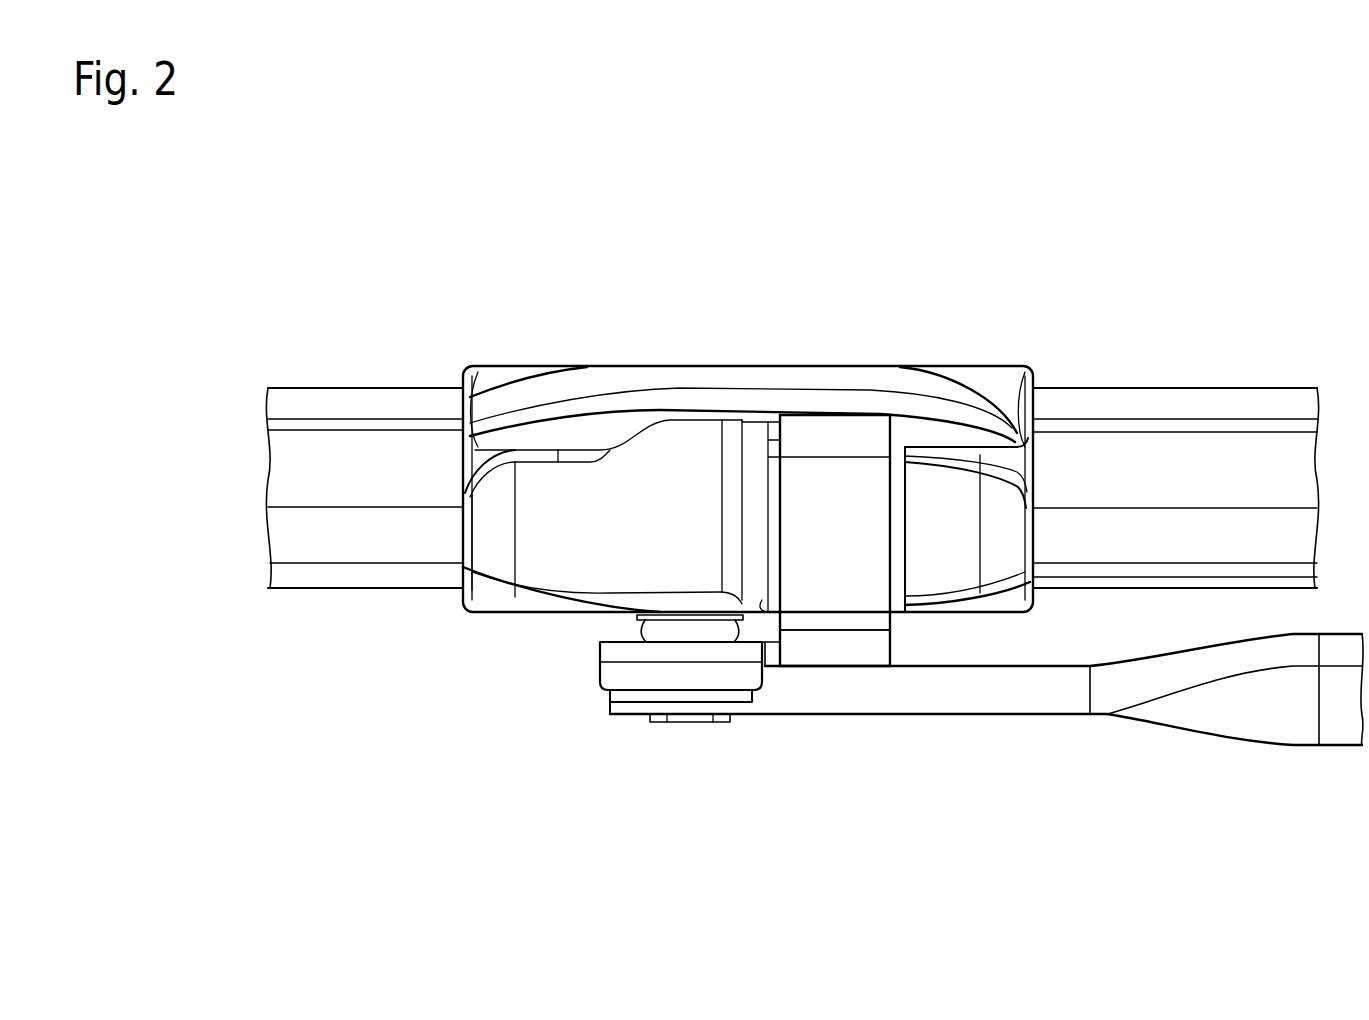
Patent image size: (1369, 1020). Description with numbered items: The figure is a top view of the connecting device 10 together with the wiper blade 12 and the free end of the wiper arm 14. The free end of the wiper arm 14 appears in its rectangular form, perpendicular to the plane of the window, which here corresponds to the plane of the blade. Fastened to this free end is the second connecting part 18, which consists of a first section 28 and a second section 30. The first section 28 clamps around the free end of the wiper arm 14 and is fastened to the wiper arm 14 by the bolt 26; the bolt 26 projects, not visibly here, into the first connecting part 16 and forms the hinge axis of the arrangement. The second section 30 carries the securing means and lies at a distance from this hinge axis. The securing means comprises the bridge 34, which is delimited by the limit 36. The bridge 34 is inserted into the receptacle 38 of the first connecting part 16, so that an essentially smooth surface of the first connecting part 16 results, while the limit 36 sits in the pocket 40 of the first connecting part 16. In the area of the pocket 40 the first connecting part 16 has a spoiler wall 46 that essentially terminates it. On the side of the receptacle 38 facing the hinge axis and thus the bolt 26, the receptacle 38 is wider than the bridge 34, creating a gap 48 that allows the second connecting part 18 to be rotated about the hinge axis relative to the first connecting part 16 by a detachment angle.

The connecting device 10 is at (718, 170).
The wiper blade 12 is at (1162, 332).
The wiper arm 14 is at (1022, 690).
The first connecting part 16 is at (572, 318).
The second connecting part 18 is at (815, 706).
The bolt 26 is at (687, 744).
The first section 28 is at (645, 680).
The second section 30 is at (863, 676).
The bridge 34 is at (857, 610).
The limit 36 is at (878, 430).
The receptacle 38 is at (752, 445).
The pocket 40 is at (824, 392).
The spoiler wall 46 is at (510, 398).
The gap 48 is at (774, 598).